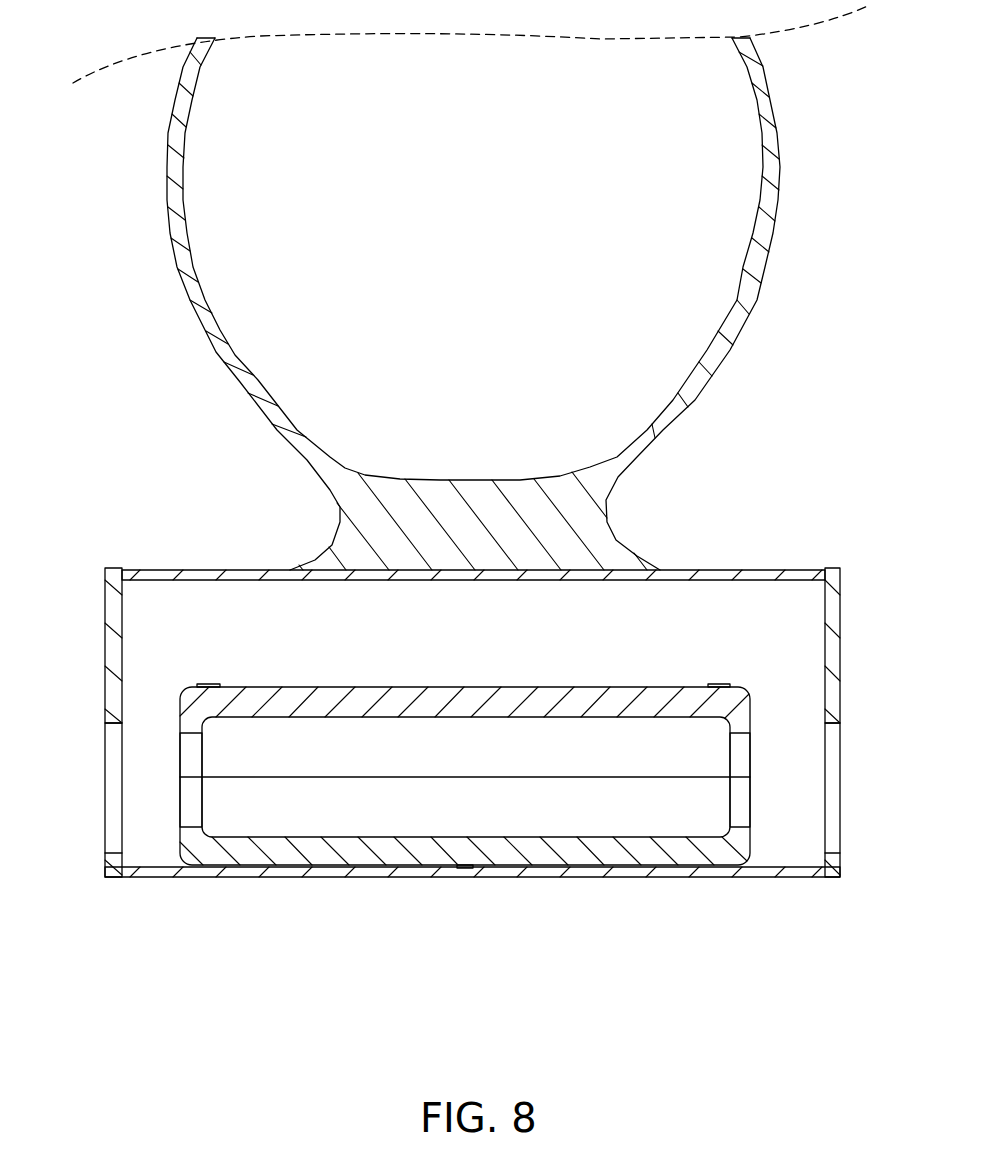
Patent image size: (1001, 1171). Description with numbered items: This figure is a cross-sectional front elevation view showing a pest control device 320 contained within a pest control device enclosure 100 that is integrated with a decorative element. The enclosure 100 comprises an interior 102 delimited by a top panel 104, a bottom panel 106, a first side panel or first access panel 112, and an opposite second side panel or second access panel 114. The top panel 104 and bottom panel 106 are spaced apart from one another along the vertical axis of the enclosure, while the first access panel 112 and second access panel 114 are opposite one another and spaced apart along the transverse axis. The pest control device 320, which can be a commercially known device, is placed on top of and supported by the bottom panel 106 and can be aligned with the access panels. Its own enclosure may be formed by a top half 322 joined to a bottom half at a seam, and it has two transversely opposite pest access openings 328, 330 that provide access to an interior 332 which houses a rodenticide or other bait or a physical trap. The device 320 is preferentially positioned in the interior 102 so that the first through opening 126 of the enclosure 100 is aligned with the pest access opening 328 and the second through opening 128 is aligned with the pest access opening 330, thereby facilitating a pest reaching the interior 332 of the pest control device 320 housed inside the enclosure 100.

The pest control device enclosure 100 is at (484, 464).
The interior 102 is at (778, 638).
The top panel 104 is at (710, 570).
The bottom panel 106 is at (683, 877).
The first access panel 112 is at (842, 670).
The second access panel 114 is at (105, 637).
The first through opening 126 is at (835, 775).
The second through opening 128 is at (110, 790).
The pest control device 320 is at (465, 770).
The top half 322 is at (310, 688).
The pest access opening 328 is at (737, 795).
The pest access opening 330 is at (197, 795).
The interior 332 is at (343, 817).